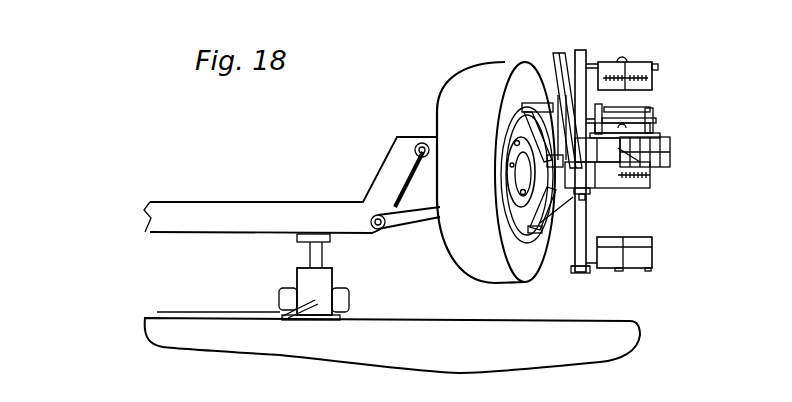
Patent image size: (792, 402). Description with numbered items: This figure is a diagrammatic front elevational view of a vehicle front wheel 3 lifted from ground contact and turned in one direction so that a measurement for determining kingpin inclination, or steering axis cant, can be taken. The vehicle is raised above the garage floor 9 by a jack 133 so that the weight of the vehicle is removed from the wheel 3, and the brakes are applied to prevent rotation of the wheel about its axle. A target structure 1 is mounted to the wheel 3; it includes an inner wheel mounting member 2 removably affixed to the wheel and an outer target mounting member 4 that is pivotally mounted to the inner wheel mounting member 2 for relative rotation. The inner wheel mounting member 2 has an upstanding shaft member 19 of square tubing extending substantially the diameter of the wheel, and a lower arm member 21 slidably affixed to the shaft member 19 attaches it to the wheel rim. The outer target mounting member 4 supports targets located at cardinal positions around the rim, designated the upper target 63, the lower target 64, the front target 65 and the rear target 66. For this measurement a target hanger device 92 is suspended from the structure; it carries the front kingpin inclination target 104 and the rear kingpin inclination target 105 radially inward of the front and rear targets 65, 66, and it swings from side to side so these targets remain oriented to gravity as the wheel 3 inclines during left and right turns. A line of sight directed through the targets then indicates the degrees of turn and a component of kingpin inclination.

The target structure 1 is at (628, 154).
The inner wheel mounting member 2 is at (566, 52).
The wheel 3 is at (437, 90).
The outer target mounting member 4 is at (575, 266).
The garage floor 9 is at (545, 351).
The shaft member 19 is at (552, 62).
The lower arm member 21 is at (549, 238).
The upper target 63 is at (652, 78).
The lower target 64 is at (652, 245).
The front target 65 is at (603, 190).
The rear target 66 is at (650, 172).
The target hanger device 92 is at (655, 125).
The front kingpin inclination target 104 is at (620, 147).
The rear kingpin inclination target 105 is at (672, 160).
The jack 133 is at (335, 277).